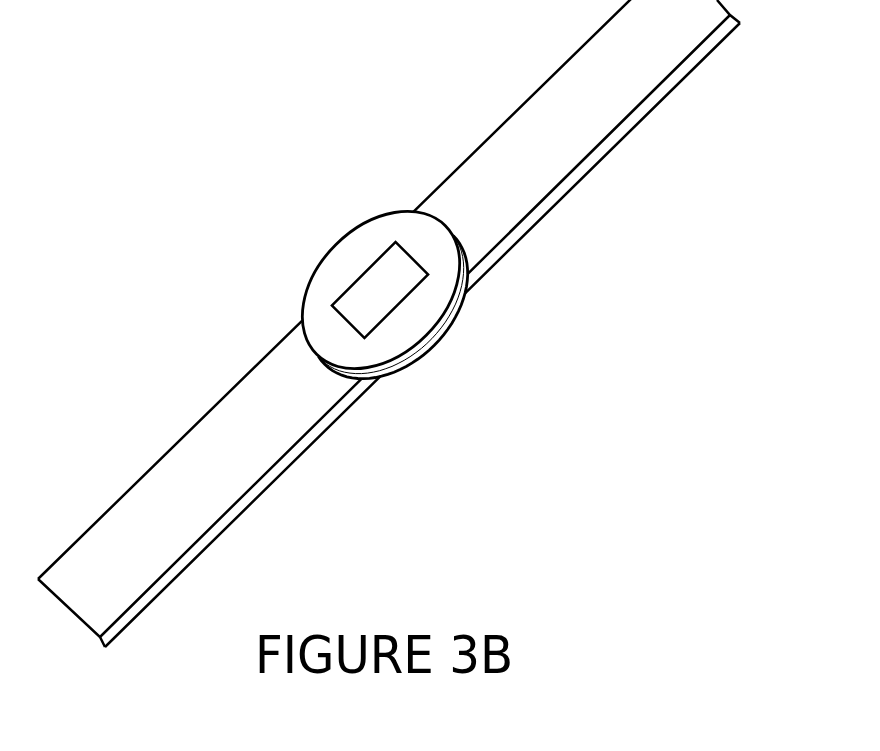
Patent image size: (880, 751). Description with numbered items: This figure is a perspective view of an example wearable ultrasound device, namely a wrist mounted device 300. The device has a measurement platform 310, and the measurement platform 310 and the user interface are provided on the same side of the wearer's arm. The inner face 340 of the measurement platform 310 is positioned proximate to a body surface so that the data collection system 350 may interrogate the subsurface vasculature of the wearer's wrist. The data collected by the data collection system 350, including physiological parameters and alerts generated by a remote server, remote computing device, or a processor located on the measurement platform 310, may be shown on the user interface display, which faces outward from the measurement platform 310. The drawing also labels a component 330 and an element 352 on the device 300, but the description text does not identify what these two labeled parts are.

The wrist mounted device 300 is at (59, 114).
The measurement platform 310 is at (428, 328).
The band 330 is at (185, 445).
The inner face 340 is at (319, 289).
The data collection system 350 is at (443, 293).
The sensor window 352 is at (380, 252).